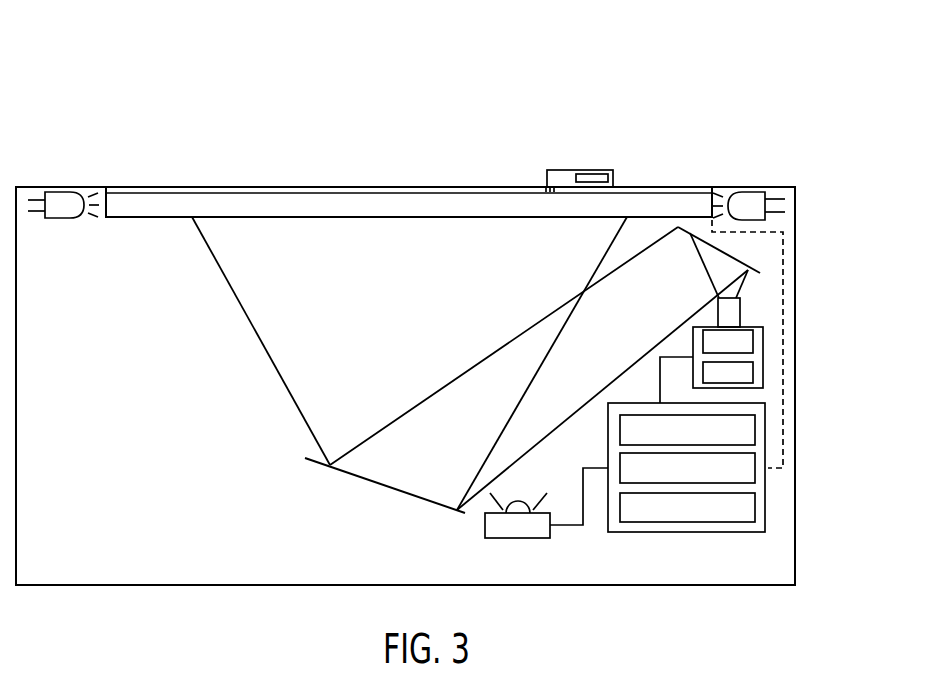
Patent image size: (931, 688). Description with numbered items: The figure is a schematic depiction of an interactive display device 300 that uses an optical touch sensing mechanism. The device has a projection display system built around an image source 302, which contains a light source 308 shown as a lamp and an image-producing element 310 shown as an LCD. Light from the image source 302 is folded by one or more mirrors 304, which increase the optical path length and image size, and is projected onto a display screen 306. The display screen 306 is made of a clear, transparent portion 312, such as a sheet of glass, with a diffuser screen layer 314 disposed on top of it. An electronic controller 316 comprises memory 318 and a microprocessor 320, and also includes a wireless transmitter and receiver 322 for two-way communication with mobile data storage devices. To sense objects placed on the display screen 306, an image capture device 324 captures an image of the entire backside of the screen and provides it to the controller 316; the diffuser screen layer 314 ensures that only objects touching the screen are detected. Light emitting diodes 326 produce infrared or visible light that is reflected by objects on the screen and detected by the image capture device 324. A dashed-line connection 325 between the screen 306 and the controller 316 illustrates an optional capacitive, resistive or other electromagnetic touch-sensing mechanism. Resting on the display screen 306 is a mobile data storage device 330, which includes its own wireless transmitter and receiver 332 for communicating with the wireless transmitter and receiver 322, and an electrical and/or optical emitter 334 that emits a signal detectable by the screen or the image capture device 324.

The interactive display device 300 is at (138, 68).
The image source 302 is at (764, 356).
The mirrors 304 is at (385, 488).
The display screen 306 is at (219, 178).
The light source 308 is at (754, 372).
The image-producing element 310 is at (754, 341).
The clear, transparent portion 312 is at (256, 209).
The diffuser screen layer 314 is at (288, 192).
The electronic controller 316 is at (631, 533).
The memory 318 is at (756, 428).
The microprocessor 320 is at (756, 472).
The wireless transmitter and receiver 322 is at (688, 523).
The image capture device 324 is at (518, 527).
The dashed-line connection 325 is at (784, 283).
The light emitting diodes 326 is at (63, 190).
The mobile data storage device 330 is at (563, 170).
The wireless transmitter and receiver 332 is at (598, 176).
The electrical and/or optical emitter 334 is at (545, 186).